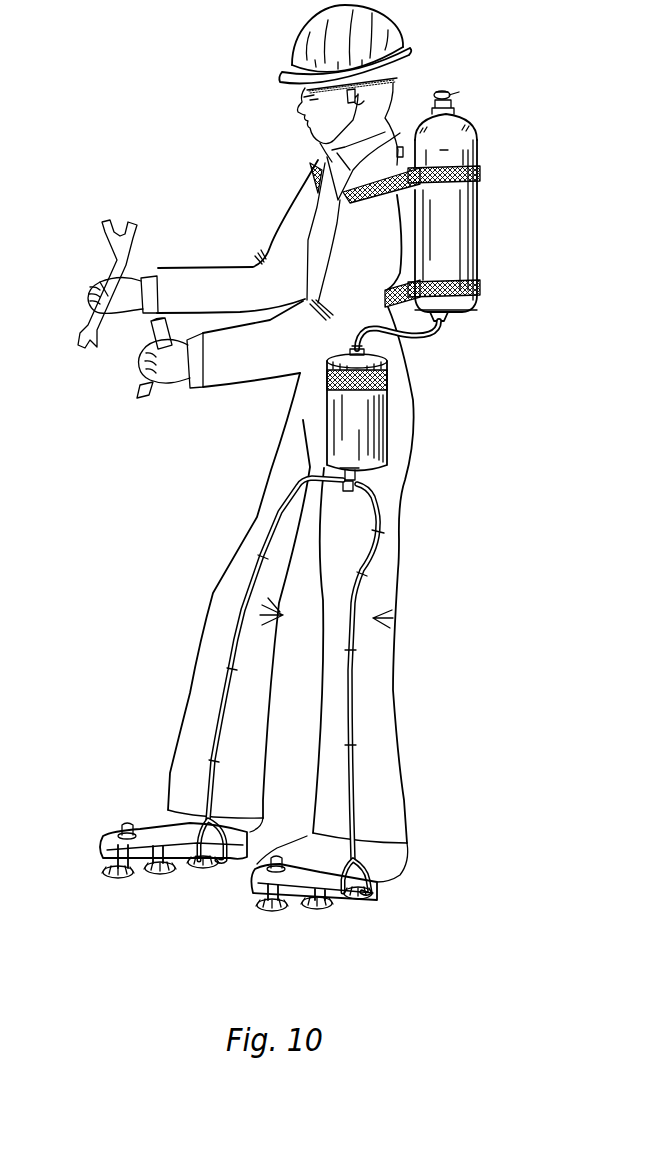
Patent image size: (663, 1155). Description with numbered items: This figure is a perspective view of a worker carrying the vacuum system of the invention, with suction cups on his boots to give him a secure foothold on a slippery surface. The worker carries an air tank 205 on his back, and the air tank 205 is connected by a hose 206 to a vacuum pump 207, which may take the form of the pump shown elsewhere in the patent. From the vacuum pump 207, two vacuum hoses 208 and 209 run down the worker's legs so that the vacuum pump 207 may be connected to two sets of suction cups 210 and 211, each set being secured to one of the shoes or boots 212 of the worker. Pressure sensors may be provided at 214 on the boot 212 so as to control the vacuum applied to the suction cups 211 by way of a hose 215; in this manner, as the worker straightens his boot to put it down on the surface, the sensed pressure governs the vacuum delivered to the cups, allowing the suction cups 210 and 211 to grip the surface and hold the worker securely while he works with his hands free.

The air tank 205 is at (477, 214).
The hose 206 is at (437, 336).
The vacuum pump 207 is at (387, 428).
The vacuum hose 208 is at (357, 592).
The vacuum hose 209 is at (222, 707).
The suction cups 210 is at (160, 874).
The suction cups 211 is at (362, 900).
The boot 212 is at (103, 843).
The pressure sensors 214 is at (127, 822).
The hose 215 is at (376, 545).